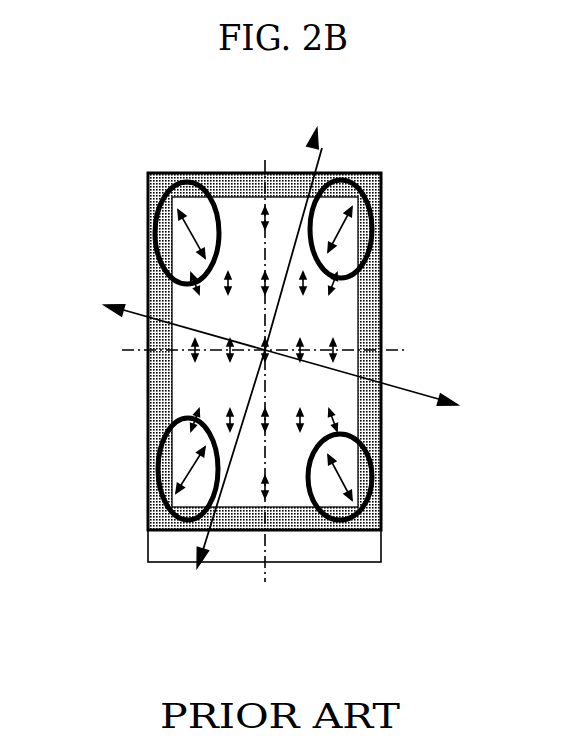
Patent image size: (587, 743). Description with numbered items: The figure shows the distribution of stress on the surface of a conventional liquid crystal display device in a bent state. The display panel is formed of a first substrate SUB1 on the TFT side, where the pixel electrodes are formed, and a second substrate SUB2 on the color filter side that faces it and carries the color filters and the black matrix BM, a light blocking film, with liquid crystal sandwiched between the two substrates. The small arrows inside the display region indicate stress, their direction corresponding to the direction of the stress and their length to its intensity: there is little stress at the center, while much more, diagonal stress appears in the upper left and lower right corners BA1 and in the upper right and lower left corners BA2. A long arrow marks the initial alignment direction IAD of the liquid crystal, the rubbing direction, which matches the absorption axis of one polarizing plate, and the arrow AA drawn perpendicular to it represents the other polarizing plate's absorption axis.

The upper left and lower right corners BA1 is at (152, 193).
The upper right and lower left corners BA2 is at (382, 230).
The black matrix BM is at (382, 278).
The first substrate SUB1 is at (313, 543).
The second substrate SUB2 is at (382, 190).
The initial alignment direction IAD is at (333, 133).
The arrow perpendicular to the initial alignment direction AA is at (418, 393).